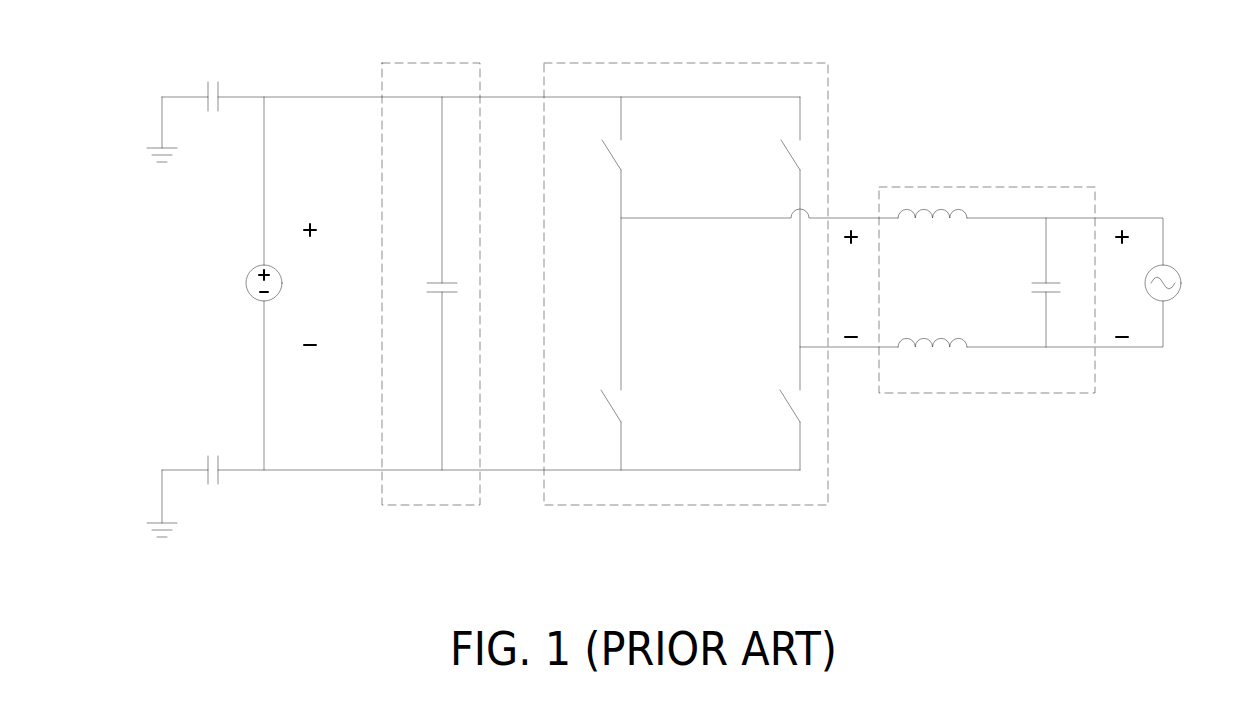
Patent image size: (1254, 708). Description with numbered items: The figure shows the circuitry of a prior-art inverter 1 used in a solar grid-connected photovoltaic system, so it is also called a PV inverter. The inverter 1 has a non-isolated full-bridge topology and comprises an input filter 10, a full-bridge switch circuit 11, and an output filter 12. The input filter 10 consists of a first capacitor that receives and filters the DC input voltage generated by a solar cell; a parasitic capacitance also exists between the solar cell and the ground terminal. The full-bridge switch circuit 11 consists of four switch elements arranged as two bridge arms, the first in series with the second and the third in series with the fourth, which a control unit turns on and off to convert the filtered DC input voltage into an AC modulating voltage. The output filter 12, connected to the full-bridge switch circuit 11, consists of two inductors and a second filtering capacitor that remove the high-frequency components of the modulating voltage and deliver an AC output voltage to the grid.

The inverter 1 is at (1067, 48).
The input filter 10 is at (431, 63).
The full-bridge switch circuit 11 is at (686, 63).
The output filter 12 is at (989, 187).